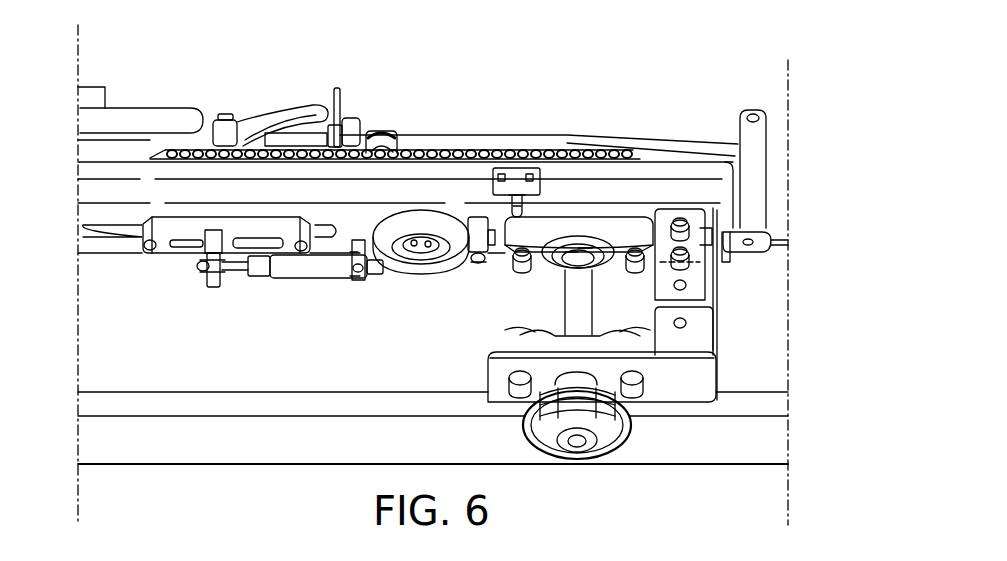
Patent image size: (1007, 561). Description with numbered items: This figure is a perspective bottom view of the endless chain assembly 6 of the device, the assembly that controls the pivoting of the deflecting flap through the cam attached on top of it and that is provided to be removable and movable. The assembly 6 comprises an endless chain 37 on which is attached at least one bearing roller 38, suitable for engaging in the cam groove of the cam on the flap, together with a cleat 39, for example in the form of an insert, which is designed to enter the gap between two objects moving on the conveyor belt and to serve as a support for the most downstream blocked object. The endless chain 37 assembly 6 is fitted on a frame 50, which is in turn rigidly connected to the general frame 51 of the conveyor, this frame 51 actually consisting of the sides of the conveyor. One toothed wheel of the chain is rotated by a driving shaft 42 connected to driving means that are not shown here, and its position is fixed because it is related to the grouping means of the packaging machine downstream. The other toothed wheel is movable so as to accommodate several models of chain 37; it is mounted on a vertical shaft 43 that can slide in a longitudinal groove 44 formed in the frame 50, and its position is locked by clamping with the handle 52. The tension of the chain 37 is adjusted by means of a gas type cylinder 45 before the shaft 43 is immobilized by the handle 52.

The endless chain assembly 6 is at (424, 120).
The endless chain 37 is at (572, 148).
The bearing roller 38 is at (382, 132).
The cleat 39 is at (336, 90).
The driving shaft 42 is at (575, 308).
The shaft 43 is at (213, 280).
The longitudinal groove 44 is at (177, 245).
The gas type cylinder 45 is at (333, 268).
The frame 50 is at (645, 170).
The general frame 51 is at (770, 292).
The handle 52 is at (267, 118).